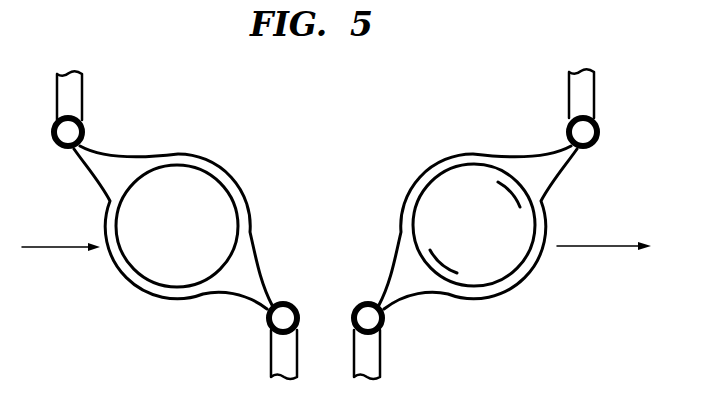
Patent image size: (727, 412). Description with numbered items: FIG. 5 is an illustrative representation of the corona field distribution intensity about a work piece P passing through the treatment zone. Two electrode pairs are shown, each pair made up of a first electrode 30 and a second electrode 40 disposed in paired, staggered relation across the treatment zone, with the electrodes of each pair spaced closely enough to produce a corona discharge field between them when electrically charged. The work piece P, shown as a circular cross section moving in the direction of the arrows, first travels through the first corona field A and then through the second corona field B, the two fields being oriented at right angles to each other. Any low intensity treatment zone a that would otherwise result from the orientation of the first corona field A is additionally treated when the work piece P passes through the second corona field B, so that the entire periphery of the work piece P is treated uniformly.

The electrode 30 is at (68, 112).
The electrode 40 is at (282, 357).
The first corona field A is at (464, 151).
The second corona field B is at (190, 150).
The work piece P is at (132, 272).
The low intensity treatment zone a is at (522, 180).